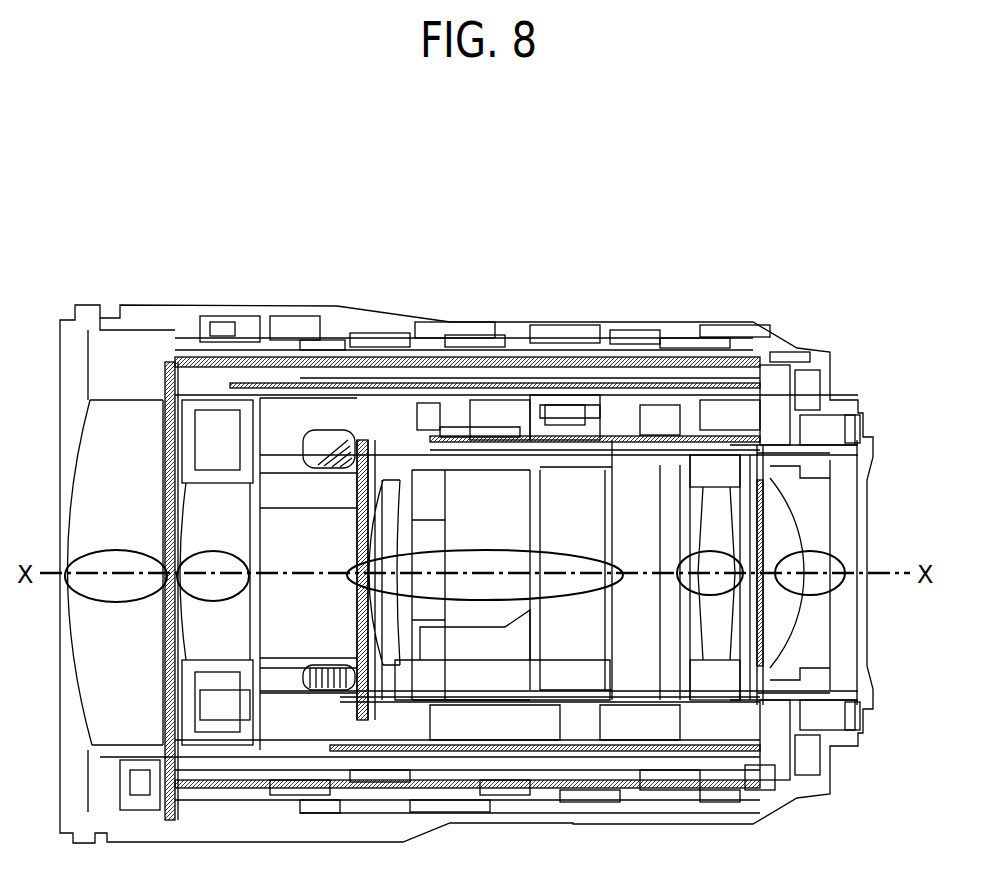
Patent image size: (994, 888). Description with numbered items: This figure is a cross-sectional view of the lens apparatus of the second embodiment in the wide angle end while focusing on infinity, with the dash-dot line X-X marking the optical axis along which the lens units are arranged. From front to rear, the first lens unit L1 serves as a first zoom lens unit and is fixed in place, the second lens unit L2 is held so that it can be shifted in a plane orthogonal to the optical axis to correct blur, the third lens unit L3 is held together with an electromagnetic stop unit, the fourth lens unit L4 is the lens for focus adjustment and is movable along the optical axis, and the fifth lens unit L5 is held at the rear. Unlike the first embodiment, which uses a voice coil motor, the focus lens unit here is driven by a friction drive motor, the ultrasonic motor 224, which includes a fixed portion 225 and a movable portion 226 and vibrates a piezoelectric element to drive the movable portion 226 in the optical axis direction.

The first lens unit L1 is at (118, 551).
The second lens unit L2 is at (211, 551).
The third lens unit L3 is at (478, 551).
The fourth lens unit L4 is at (711, 550).
The fifth lens unit L5 is at (808, 550).
The ultrasonic motor 224 is at (548, 248).
The fixed portion 225 is at (483, 427).
The movable portion 226 is at (573, 413).